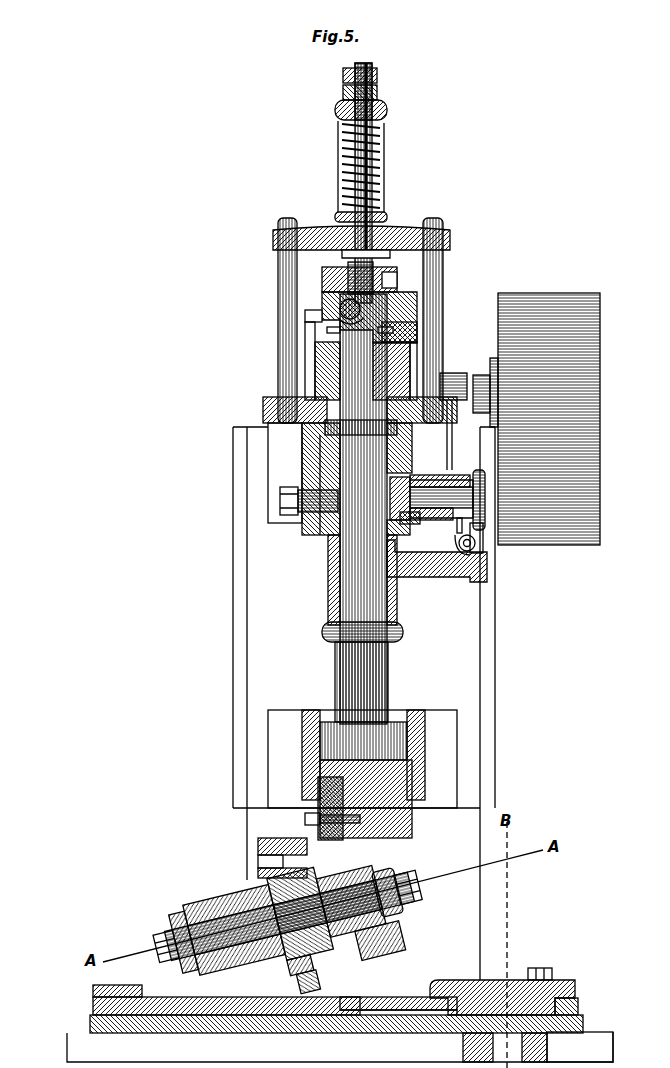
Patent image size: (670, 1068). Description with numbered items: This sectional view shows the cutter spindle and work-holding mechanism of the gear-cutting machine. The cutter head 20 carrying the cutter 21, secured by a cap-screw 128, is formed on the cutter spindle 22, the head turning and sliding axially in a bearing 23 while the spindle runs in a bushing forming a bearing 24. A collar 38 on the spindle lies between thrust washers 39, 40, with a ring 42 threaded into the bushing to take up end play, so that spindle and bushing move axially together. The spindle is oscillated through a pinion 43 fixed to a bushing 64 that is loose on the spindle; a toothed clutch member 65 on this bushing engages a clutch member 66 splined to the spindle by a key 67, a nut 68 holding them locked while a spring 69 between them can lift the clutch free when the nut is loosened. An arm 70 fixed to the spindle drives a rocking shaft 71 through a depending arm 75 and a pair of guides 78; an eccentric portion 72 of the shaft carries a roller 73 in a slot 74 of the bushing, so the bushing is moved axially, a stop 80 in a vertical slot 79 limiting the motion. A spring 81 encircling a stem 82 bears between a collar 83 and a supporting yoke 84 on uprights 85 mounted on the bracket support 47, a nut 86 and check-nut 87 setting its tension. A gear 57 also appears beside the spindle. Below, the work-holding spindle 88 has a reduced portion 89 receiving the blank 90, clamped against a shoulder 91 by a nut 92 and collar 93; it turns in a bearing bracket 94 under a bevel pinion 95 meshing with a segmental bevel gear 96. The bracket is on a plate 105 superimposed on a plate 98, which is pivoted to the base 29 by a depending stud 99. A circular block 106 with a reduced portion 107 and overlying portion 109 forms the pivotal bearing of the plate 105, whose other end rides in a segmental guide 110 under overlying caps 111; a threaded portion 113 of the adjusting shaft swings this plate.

The stem 82 is at (365, 66).
The check-nut 87 is at (377, 78).
The nut 86 is at (377, 93).
The collar 83 is at (388, 110).
The spring 81 is at (383, 164).
The supporting yoke 84 is at (393, 232).
The uprights 85 is at (278, 288).
The nut 68 is at (383, 276).
The toothed clutch member 66 is at (388, 320).
The key 67 is at (338, 306).
The toothed clutch member 65 is at (327, 331).
The spring 69 is at (412, 336).
The bushing 64 is at (322, 358).
The pinion 43 is at (312, 378).
The cutter spindle 22 is at (345, 603).
The support 47 is at (268, 412).
The ring 42 is at (330, 407).
The thrust washer 39 is at (415, 405).
The gear 57 is at (530, 303).
The collar 38 is at (325, 432).
The thrust washer 40 is at (325, 447).
The stop 80 is at (300, 484).
The bearing 24 is at (330, 532).
The vertical slot 79 is at (308, 522).
The slot 74 is at (402, 492).
The rocking shaft 71 is at (428, 490).
The depending arm 75 is at (478, 520).
The roller 73 is at (410, 524).
The eccentric portion 72 is at (459, 530).
The guides 78 is at (470, 548).
The arm 70 is at (432, 568).
The bearing 23 is at (425, 730).
The cutter head 20 is at (405, 828).
The cap-screw 128 is at (308, 812).
The cutter 21 is at (325, 836).
The segmental bevel gear 96 is at (262, 846).
The right-hand threaded portion 113 is at (160, 968).
The bearing bracket 94 is at (188, 905).
The work-holding spindle 88 is at (220, 908).
The reduced portion 89 is at (330, 912).
The shoulder 91 is at (318, 942).
The bevel pinion 95 is at (300, 970).
The blank 90 is at (386, 935).
The collar 93 is at (412, 908).
The nut 92 is at (420, 890).
The overlying caps 111 is at (93, 989).
The segmental guide 110 is at (95, 1006).
The plate 105 is at (372, 1000).
The plate 98 is at (92, 1026).
The circular block 106 is at (487, 990).
The reduced portion 107 is at (580, 1000).
The overlying portion 109 is at (575, 985).
The depending stud 99 is at (540, 1046).
The base 29 is at (606, 1035).